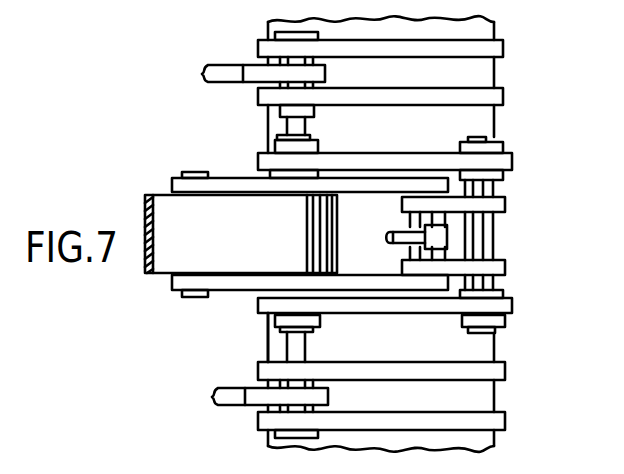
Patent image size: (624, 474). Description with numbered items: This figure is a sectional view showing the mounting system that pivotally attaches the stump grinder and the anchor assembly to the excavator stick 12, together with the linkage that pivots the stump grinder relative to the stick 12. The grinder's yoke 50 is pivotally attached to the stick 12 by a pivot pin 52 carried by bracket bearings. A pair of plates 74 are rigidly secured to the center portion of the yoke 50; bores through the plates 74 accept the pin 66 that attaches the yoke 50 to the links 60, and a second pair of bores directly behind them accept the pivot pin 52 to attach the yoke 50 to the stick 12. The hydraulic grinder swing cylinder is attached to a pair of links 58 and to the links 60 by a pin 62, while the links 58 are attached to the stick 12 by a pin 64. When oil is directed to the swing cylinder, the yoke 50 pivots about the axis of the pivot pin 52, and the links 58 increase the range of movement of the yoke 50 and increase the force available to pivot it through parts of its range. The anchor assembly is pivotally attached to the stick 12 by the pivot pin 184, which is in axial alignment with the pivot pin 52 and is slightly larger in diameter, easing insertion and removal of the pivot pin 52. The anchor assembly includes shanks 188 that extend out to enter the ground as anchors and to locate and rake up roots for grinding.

The stick 12 is at (268, 251).
The yoke 50 is at (482, 77).
The pivot pin 52 is at (288, 338).
The links 58 is at (240, 178).
The links 60 is at (498, 201).
The pin 62 is at (422, 257).
The pin 64 is at (195, 298).
The pin 66 is at (493, 236).
The plates 74 is at (410, 158).
The pivot pin 184 is at (303, 112).
The shanks 188 is at (226, 78).